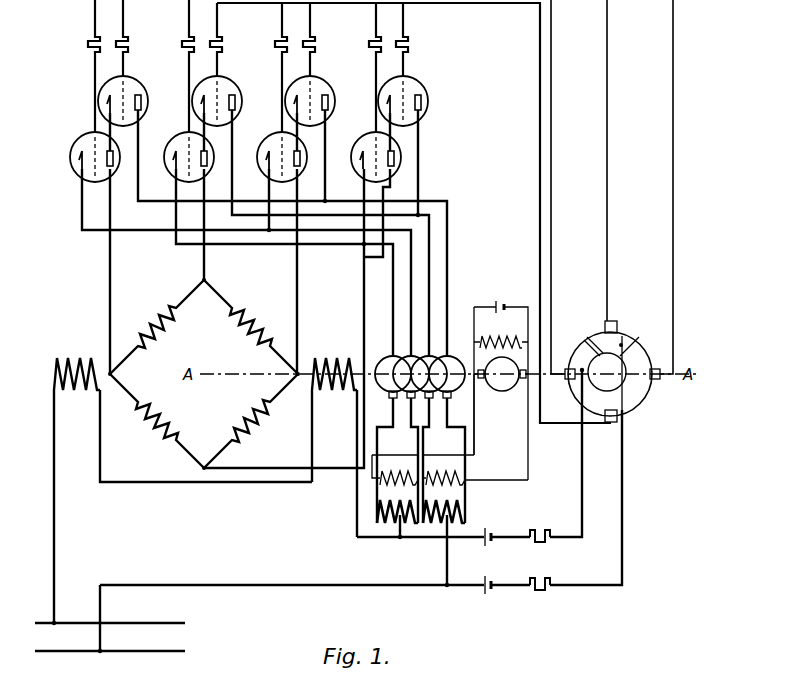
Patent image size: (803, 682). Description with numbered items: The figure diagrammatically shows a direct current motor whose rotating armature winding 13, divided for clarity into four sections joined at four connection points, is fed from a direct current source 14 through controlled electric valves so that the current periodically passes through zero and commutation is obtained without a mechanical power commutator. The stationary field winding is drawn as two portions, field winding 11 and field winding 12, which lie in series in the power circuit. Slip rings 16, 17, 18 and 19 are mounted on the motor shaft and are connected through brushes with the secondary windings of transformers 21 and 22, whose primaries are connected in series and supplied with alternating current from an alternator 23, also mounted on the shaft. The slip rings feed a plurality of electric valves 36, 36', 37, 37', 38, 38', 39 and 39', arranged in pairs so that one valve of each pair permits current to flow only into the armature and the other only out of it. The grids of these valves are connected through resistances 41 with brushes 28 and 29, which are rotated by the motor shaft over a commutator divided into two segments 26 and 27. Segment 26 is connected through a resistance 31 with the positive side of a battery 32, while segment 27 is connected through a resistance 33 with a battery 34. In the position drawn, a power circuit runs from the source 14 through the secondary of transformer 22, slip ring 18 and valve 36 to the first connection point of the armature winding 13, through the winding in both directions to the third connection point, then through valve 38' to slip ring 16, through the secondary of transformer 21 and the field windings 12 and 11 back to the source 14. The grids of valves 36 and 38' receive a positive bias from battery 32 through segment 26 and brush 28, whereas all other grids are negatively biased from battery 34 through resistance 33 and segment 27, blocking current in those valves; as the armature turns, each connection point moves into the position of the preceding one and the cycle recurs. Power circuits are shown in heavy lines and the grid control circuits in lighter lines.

The field winding portion 11 is at (77, 394).
The field winding portion 12 is at (318, 392).
The armature winding 13 is at (214, 355).
The direct current source 14 is at (192, 622).
The slip ring 16 is at (389, 357).
The slip ring 17 is at (408, 357).
The slip ring 18 is at (427, 357).
The slip ring 19 is at (445, 357).
The transformer 21 is at (390, 497).
The transformer 22 is at (450, 499).
The alternator 23 is at (478, 360).
The commutator segment 26 is at (632, 336).
The commutator segment 27 is at (647, 396).
The brush 28 is at (617, 325).
The brush 29 is at (580, 372).
The resistance 31 is at (540, 575).
The battery 32 is at (488, 575).
The resistance 33 is at (540, 527).
The battery 34 is at (488, 527).
The electric valve 36 is at (425, 101).
The electric valve 36' is at (406, 157).
The electric valve 37 is at (324, 100).
The electric valve 37' is at (304, 155).
The electric valve 38 is at (230, 101).
The electric valve 38' is at (211, 154).
The electric valve 39 is at (98, 101).
The electric valve 39' is at (74, 157).
The resistances 41 is at (415, 33).